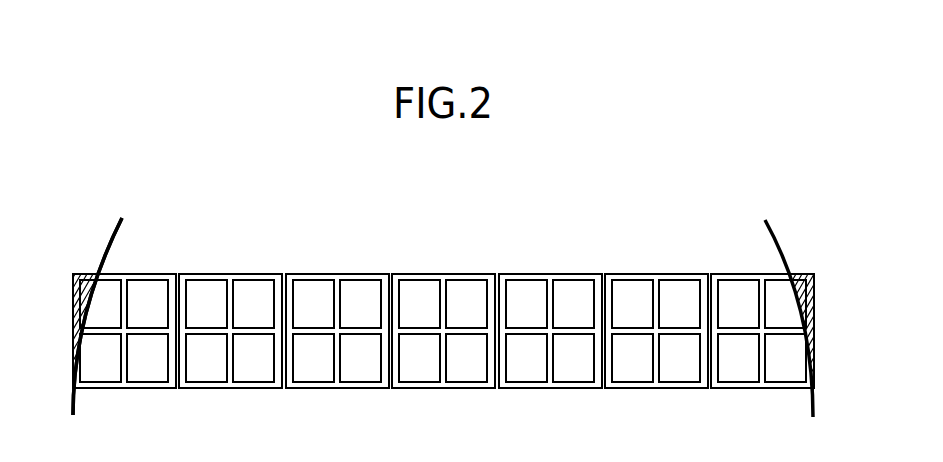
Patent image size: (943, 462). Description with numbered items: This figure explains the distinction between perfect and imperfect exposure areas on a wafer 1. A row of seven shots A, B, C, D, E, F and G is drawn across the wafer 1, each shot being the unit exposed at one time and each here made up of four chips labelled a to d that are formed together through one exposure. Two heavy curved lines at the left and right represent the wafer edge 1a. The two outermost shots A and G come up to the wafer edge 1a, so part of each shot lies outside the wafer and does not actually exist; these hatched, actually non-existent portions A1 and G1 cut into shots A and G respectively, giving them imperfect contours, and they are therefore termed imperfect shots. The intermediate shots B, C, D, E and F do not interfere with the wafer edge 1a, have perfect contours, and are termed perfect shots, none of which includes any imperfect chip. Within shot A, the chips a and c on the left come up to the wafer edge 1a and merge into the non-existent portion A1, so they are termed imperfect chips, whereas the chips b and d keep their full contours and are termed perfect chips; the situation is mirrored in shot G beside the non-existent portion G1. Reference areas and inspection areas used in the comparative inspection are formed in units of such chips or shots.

The wafer 1 is at (108, 228).
The wafer edge 1a is at (98, 262).
The shot A is at (132, 273).
The shot B is at (232, 273).
The shot C is at (340, 273).
The shot D is at (442, 273).
The shot E is at (550, 273).
The shot F is at (655, 273).
The shot G is at (729, 273).
The non-existent portion A1 is at (77, 293).
The non-existent portion G1 is at (810, 297).